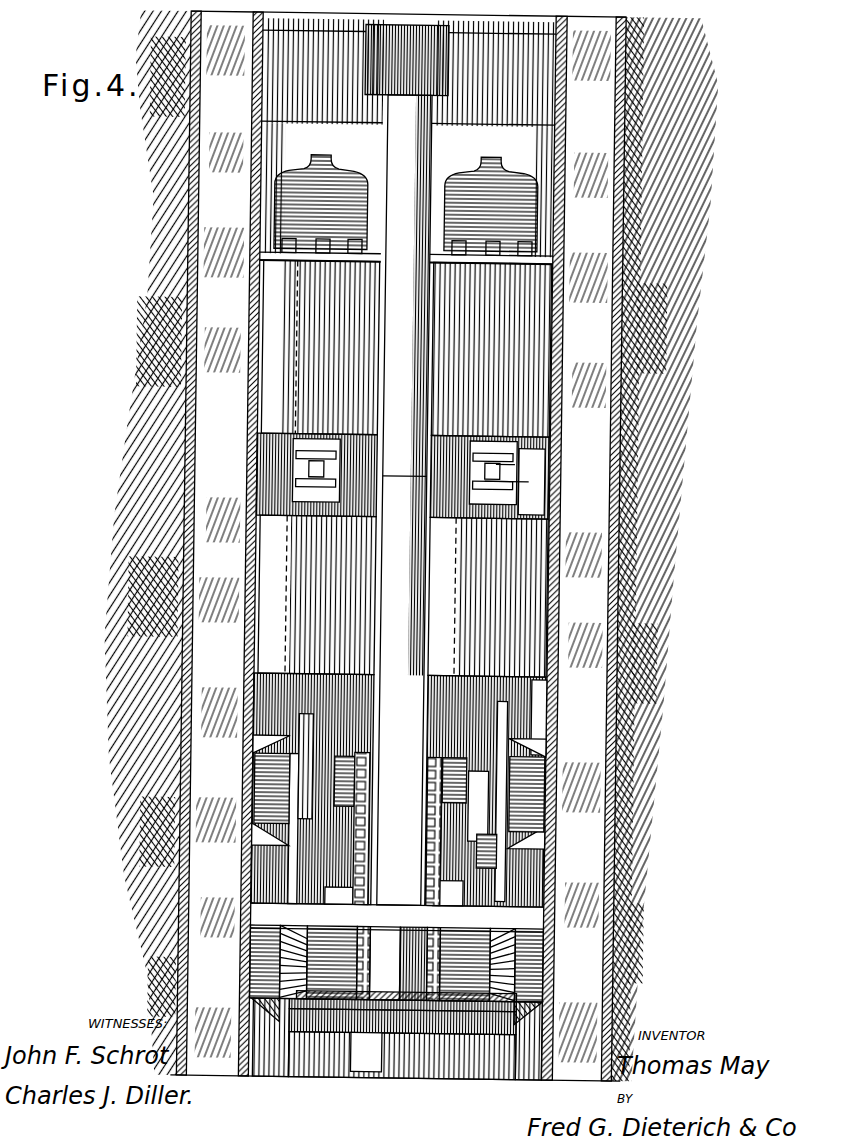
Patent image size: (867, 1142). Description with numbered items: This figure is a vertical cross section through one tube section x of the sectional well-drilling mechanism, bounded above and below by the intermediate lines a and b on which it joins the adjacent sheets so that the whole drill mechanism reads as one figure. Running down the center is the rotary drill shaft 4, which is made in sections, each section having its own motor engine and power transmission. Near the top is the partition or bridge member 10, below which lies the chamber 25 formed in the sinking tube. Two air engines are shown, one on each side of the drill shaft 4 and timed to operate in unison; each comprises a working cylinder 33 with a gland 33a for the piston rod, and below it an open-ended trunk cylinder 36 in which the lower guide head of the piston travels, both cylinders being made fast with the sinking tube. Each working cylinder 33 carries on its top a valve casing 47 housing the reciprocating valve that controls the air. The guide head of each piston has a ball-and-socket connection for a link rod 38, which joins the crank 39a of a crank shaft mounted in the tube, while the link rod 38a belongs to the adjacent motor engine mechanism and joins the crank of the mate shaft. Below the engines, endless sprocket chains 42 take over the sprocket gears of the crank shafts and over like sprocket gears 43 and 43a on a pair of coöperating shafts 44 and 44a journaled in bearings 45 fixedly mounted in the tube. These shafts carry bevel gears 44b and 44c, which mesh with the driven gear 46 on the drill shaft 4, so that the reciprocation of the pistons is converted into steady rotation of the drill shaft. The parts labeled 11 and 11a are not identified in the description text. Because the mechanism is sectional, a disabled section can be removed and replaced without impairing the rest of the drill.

The rotary drill shaft 4 is at (401, 465).
The partition or bridge member 10 is at (252, 118).
The coupling 11 is at (262, 474).
The coupling pin 11a is at (535, 480).
The chamber 25 is at (408, 137).
The working cylinder 33 is at (406, 348).
The gland 33a is at (525, 463).
The trunk cylinder 36 is at (570, 495).
The link rod 38 is at (318, 683).
The link rod 38a is at (504, 720).
The crank 39a is at (571, 849).
The endless sprocket chain 42 is at (447, 757).
The sprocket gear 43 is at (398, 964).
The sprocket gear 43a is at (468, 945).
The coöperating shaft 44 is at (318, 962).
The coöperating shaft 44a is at (477, 965).
The bevel gear 44b is at (327, 916).
The bevel gear 44c is at (474, 918).
The bearings 45 is at (266, 975).
The driven gear 46 is at (396, 1035).
The valve casing 47 is at (407, 209).
The tube section x is at (253, 539).
The intermediate line a is at (173, 7).
The intermediate line b is at (652, 14).